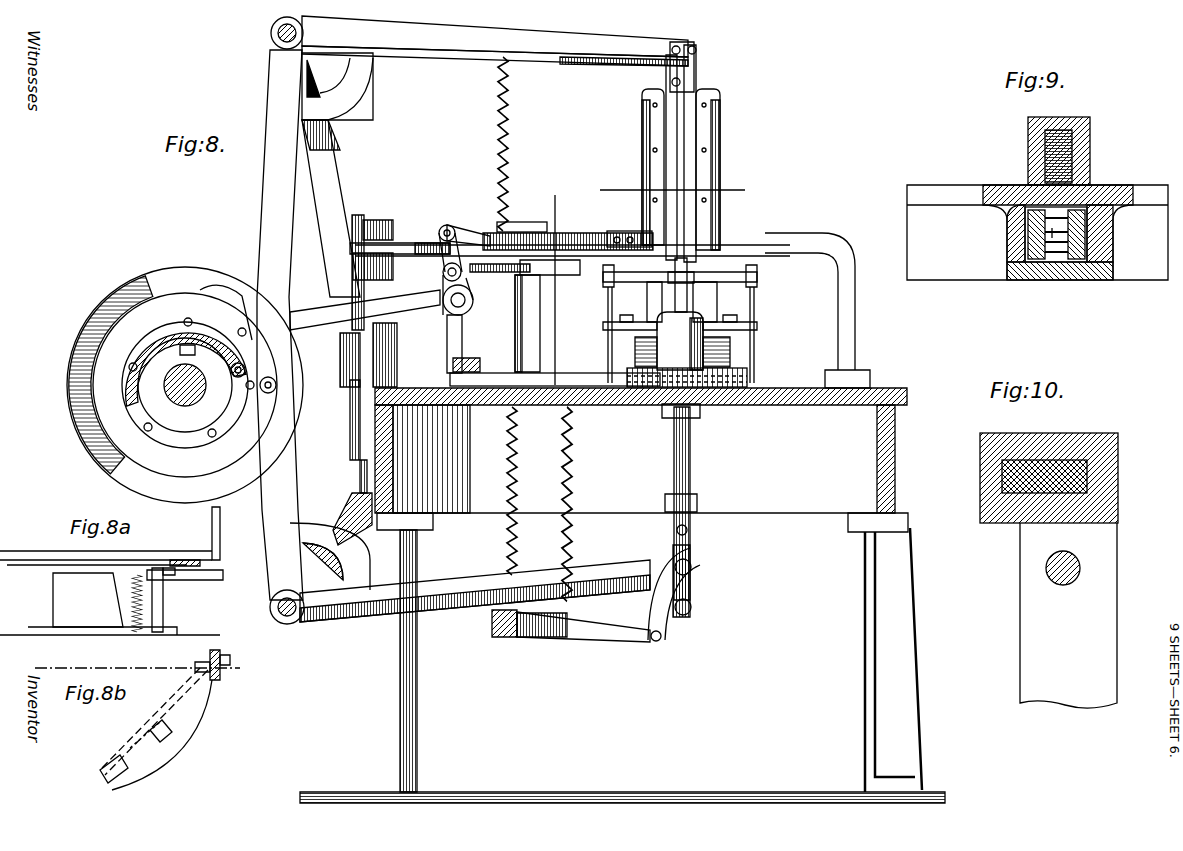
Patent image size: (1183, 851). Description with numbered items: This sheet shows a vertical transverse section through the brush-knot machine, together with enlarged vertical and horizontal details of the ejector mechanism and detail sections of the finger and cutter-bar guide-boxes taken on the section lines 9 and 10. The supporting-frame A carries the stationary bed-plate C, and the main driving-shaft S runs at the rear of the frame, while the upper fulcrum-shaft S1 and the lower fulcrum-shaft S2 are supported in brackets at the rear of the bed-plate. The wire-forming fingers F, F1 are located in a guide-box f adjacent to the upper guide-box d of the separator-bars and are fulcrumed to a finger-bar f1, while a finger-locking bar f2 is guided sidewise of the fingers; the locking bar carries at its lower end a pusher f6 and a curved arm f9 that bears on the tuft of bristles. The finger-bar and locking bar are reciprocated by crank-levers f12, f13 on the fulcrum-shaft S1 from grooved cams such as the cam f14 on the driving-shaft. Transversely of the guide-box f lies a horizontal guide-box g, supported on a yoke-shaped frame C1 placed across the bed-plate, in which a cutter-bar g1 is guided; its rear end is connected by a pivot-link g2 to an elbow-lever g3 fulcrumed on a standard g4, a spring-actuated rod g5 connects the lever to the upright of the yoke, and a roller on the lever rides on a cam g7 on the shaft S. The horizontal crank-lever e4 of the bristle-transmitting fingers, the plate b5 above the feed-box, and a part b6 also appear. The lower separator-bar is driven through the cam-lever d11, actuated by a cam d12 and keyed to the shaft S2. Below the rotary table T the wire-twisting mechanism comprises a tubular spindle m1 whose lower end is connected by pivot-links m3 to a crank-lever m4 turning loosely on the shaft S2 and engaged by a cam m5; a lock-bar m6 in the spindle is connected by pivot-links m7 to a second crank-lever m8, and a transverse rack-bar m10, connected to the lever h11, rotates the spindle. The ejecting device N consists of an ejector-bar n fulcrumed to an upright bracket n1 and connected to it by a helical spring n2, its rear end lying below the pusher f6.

In FIG. 8, the main driving-shaft S is at (185, 385).
In FIG. 8, the upper fulcrum-shaft S1 is at (270, 30).
In FIG. 8, the lower fulcrum-shaft S2 is at (270, 607).
In FIG. 8, the supporting-frame A is at (447, 497).
In FIG. 8, the bed-plate C is at (421, 393).
In FIG. 8, the yoke-shaped frame C1 is at (540, 322).
In FIG. 10, the yoke-shaped frame C1 is at (1068, 615).
In FIG. 8, the guide-box f is at (658, 148).
In FIG. 9, the guide-box f is at (1028, 255).
In FIG. 8, the finger-bar f1 is at (666, 168).
In FIG. 9, the finger-bar f1 is at (1030, 232).
In FIG. 8, the finger-locking bar f2 is at (696, 165).
In FIG. 8A, the finger-locking bar f2 is at (222, 548).
In FIG. 8B, the finger-locking bar f2 is at (222, 676).
In FIG. 9, the finger-locking bar f2 is at (1085, 232).
In FIG. 8, the pusher f6 is at (735, 245).
In FIG. 8A, the pusher f6 is at (223, 575).
In FIG. 8A, the curved arm f9 is at (208, 556).
In FIG. 8B, the curved arm f9 is at (205, 665).
In FIG. 9, the curved arm f9 is at (1030, 265).
In FIG. 8, the crank-lever f12 is at (500, 30).
In FIG. 8, the crank-lever f13 is at (612, 70).
In FIG. 8, the cam f14 is at (200, 367).
In FIG. 8, the guide-box g is at (600, 235).
In FIG. 10, the guide-box g is at (1057, 443).
In FIG. 8, the cutter-bar g1 is at (625, 231).
In FIG. 10, the cutter-bar g1 is at (1027, 480).
In FIG. 8, the pivot-link g2 is at (458, 226).
In FIG. 8, the elbow-lever g3 is at (372, 300).
In FIG. 8, the standard g4 is at (447, 338).
In FIG. 8, the spring-actuated rod g5 is at (490, 272).
In FIG. 10, the spring-actuated rod g5 is at (1046, 572).
In FIG. 8, the cam g7 is at (200, 318).
In FIG. 8, the crank-lever e4 is at (416, 246).
In FIG. 8, the rocking lever h11 is at (470, 360).
In FIG. 8, the plate b5 is at (758, 286).
In FIG. 8, the cross bar b6 is at (618, 330).
In FIG. 8, the tubular spindle m1 is at (690, 457).
In FIG. 8, the pivot-links m3 is at (692, 527).
In FIG. 8, the crank-lever m4 is at (265, 520).
In FIG. 8, the cam m5 is at (148, 352).
In FIG. 8, the lock-bar m6 is at (672, 527).
In FIG. 8, the pivot-links m7 is at (692, 592).
In FIG. 8, the crank-lever m8 is at (583, 632).
In FIG. 8, the rack-bar m10 is at (600, 384).
In FIG. 9, the guide-box d is at (1112, 137).
In FIG. 8, the cam-lever d11 is at (692, 572).
In FIG. 8, the cam d12 is at (450, 625).
In FIG. 8, the section line 9 is at (674, 186).
In FIG. 8, the section line 10 is at (552, 281).
In FIG. 8A, the rotary table T is at (106, 548).
In FIG. 8A, the brush-knot-ejecting device N is at (100, 580).
In FIG. 8B, the brush-knot-ejecting device N is at (104, 775).
In FIG. 8A, the ejector-bar n is at (172, 578).
In FIG. 8B, the ejector-bar n is at (225, 656).
In FIG. 8A, the upright bracket n1 is at (165, 612).
In FIG. 8B, the upright bracket n1 is at (170, 733).
In FIG. 8A, the helical spring n2 is at (135, 605).
In FIG. 8B, the helical spring n2 is at (145, 740).
In FIG. 9, the wire-forming finger F is at (1067, 207).
In FIG. 9, the wire-forming finger F1 is at (1050, 270).